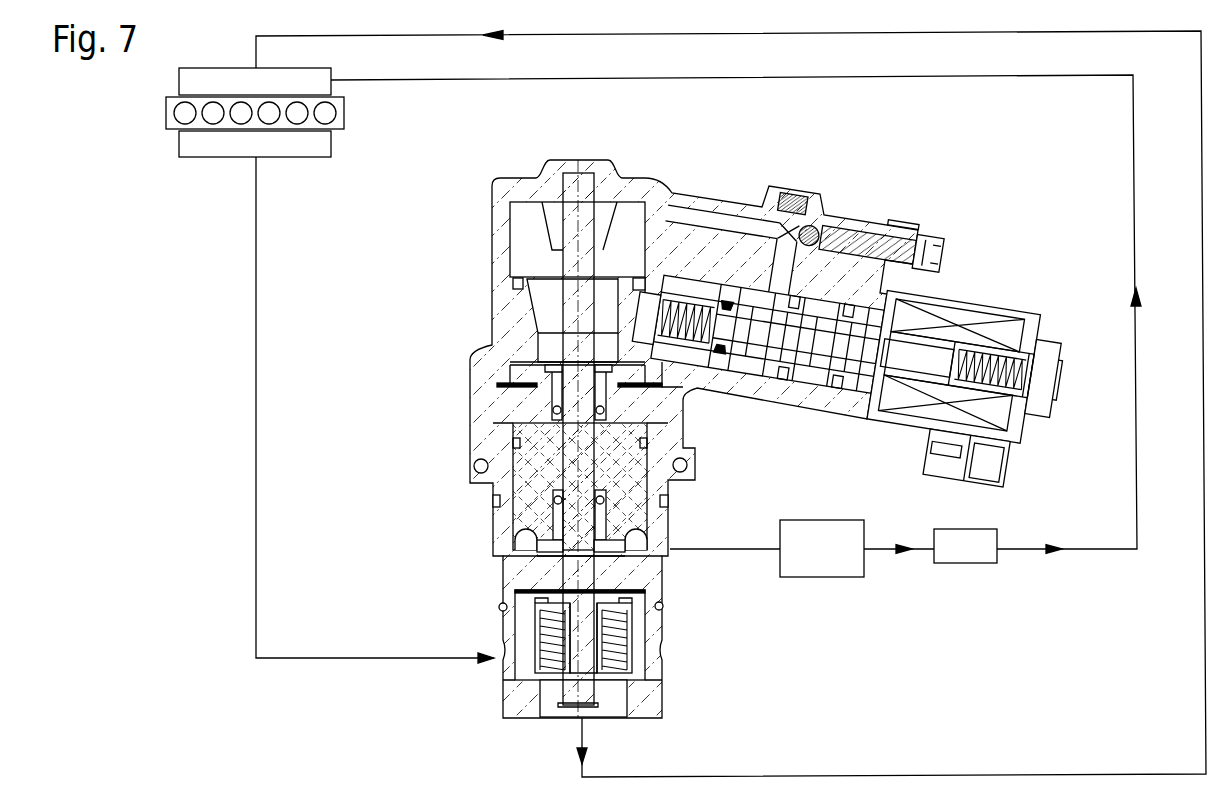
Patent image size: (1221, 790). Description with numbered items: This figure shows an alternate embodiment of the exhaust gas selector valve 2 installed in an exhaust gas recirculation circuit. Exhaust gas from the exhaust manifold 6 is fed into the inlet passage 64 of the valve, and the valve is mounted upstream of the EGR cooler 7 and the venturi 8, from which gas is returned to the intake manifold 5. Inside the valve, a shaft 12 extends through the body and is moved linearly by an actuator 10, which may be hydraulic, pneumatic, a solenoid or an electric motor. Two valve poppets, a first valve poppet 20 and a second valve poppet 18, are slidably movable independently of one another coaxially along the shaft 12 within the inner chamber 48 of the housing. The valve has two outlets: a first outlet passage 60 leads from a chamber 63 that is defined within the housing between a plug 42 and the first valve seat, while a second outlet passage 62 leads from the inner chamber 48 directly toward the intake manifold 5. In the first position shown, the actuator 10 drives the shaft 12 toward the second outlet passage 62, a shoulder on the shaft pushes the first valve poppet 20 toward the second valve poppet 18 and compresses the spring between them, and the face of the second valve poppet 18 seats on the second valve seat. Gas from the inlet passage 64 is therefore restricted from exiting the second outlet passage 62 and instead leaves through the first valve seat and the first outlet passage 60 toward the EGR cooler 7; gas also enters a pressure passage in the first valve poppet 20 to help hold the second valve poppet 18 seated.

The exhaust gas selector valve 2 is at (670, 533).
The intake manifold 5 is at (188, 81).
The exhaust manifold 6 is at (197, 147).
The EGR cooler 7 is at (833, 520).
The venturi 8 is at (977, 532).
The actuator 10 is at (948, 283).
The shaft 12 is at (560, 302).
The second valve poppet 18 is at (533, 637).
The first valve poppet 20 is at (535, 605).
The plug 42 is at (630, 460).
The inner chamber 48 is at (637, 675).
The first outlet passage 60 is at (517, 537).
The second outlet passage 62 is at (550, 718).
The chamber 63 is at (547, 555).
The inlet passage 64 is at (652, 643).